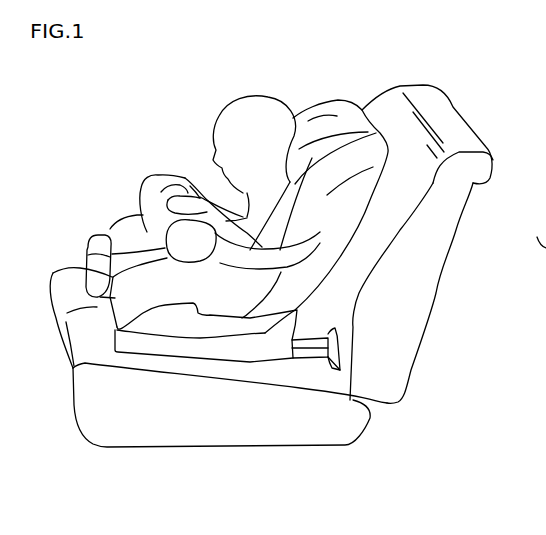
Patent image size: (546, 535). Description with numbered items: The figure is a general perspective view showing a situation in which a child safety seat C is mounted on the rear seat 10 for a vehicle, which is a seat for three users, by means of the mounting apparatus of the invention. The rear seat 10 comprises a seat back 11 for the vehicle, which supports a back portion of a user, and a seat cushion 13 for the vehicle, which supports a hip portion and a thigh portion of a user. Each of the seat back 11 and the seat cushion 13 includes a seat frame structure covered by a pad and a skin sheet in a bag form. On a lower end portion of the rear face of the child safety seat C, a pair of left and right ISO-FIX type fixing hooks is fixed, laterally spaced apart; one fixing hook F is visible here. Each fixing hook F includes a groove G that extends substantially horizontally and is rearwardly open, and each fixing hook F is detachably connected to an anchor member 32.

The child safety seat C is at (255, 306).
The rear seat 10 is at (286, 301).
The seat back 11 is at (406, 295).
The seat cushion 13 is at (218, 420).
The anchor member 32 is at (337, 368).
The fixing hook F is at (305, 360).
The groove G is at (328, 380).